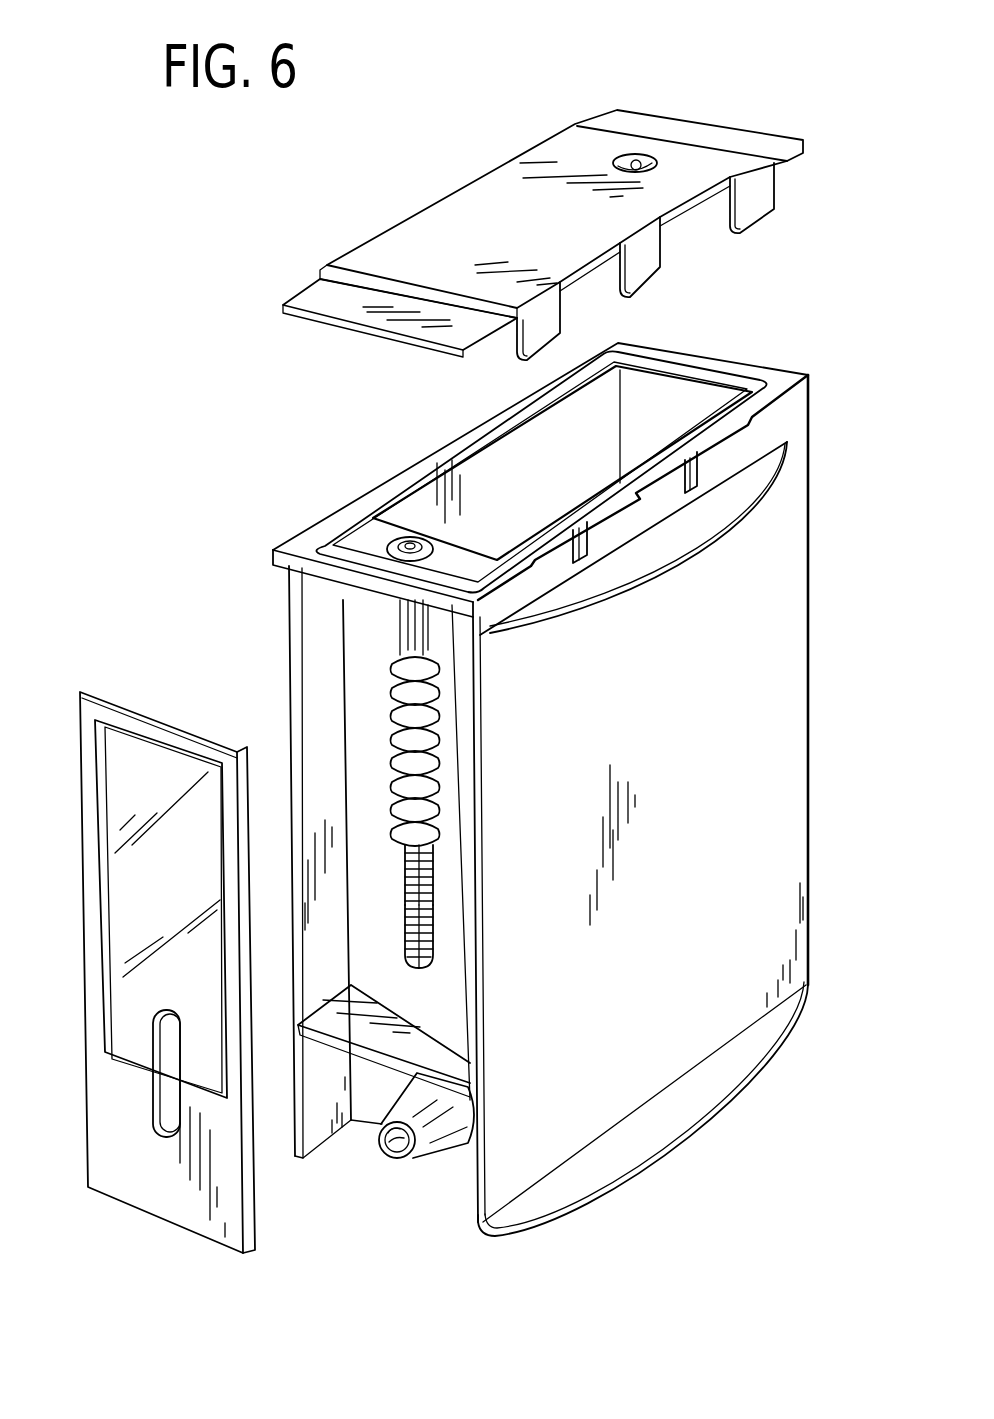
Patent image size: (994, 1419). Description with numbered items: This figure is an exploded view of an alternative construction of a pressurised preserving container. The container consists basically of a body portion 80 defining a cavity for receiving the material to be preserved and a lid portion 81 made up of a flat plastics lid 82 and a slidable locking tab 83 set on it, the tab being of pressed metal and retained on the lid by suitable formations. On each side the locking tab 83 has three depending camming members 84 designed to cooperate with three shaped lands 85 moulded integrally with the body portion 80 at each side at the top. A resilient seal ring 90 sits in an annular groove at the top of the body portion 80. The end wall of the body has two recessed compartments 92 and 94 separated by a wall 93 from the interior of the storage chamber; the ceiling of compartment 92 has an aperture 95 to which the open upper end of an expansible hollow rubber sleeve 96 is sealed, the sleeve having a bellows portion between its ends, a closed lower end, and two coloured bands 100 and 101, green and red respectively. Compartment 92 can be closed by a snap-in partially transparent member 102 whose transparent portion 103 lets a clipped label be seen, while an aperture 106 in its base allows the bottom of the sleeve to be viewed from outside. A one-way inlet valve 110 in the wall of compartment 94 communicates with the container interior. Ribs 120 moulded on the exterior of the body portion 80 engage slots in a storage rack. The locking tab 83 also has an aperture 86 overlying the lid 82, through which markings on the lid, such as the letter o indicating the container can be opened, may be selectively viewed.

The body portion 80 is at (775, 832).
The lid portion 81 is at (340, 233).
The flat plastics lid 82 is at (328, 303).
The locking tab 83 is at (468, 227).
The camming members 84 is at (653, 262).
The shaped lands 85 is at (597, 533).
The aperture 86 is at (626, 158).
The resilient seal ring 90 is at (290, 540).
The compartment 92 is at (315, 622).
The wall 93 is at (452, 958).
The compartment 94 is at (315, 1117).
The aperture 95 is at (393, 543).
The expansible hollow rubber sleeve 96 is at (372, 705).
The coloured band 100 is at (433, 868).
The coloured band 101 is at (433, 927).
The snap-in partially transparent member 102 is at (145, 1190).
The transparent portion 103 is at (187, 899).
The aperture 106 is at (168, 1105).
The one-way inlet valve 110 is at (397, 1161).
The ribs 120 is at (677, 543).